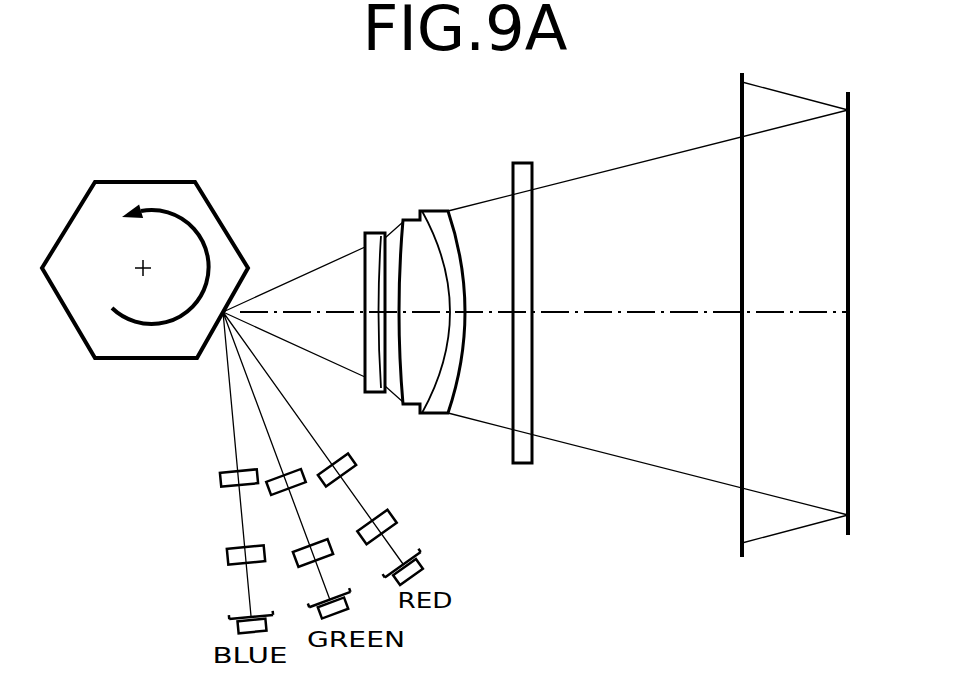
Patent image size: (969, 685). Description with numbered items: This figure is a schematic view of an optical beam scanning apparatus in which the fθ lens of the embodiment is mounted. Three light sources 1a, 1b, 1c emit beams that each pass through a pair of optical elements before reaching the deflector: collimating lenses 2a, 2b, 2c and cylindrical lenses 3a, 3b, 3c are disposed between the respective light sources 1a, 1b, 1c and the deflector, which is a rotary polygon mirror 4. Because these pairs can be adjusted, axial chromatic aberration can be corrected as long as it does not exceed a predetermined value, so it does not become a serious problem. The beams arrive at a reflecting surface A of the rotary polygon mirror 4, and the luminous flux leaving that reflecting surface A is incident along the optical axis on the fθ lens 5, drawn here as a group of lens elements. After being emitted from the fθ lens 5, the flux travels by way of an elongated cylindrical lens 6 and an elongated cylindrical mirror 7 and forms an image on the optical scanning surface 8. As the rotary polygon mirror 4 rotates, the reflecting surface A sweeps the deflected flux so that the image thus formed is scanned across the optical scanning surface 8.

The light source 1a is at (418, 560).
The light source 1b is at (335, 598).
The light source 1c is at (237, 618).
The collimating lens 2a is at (397, 513).
The collimating lens 2b is at (323, 541).
The collimating lens 2c is at (228, 548).
The cylindrical lens 3a is at (353, 459).
The cylindrical lens 3b is at (293, 471).
The cylindrical lens 3c is at (220, 472).
The rotary polygon mirror 4 is at (126, 190).
The reflecting surface A is at (243, 288).
The scanning lens group 5 is at (457, 200).
The elongated cylindrical lens 6 is at (522, 163).
The elongated cylindrical mirror 7 is at (847, 97).
The optical scanning surface 8 is at (740, 97).